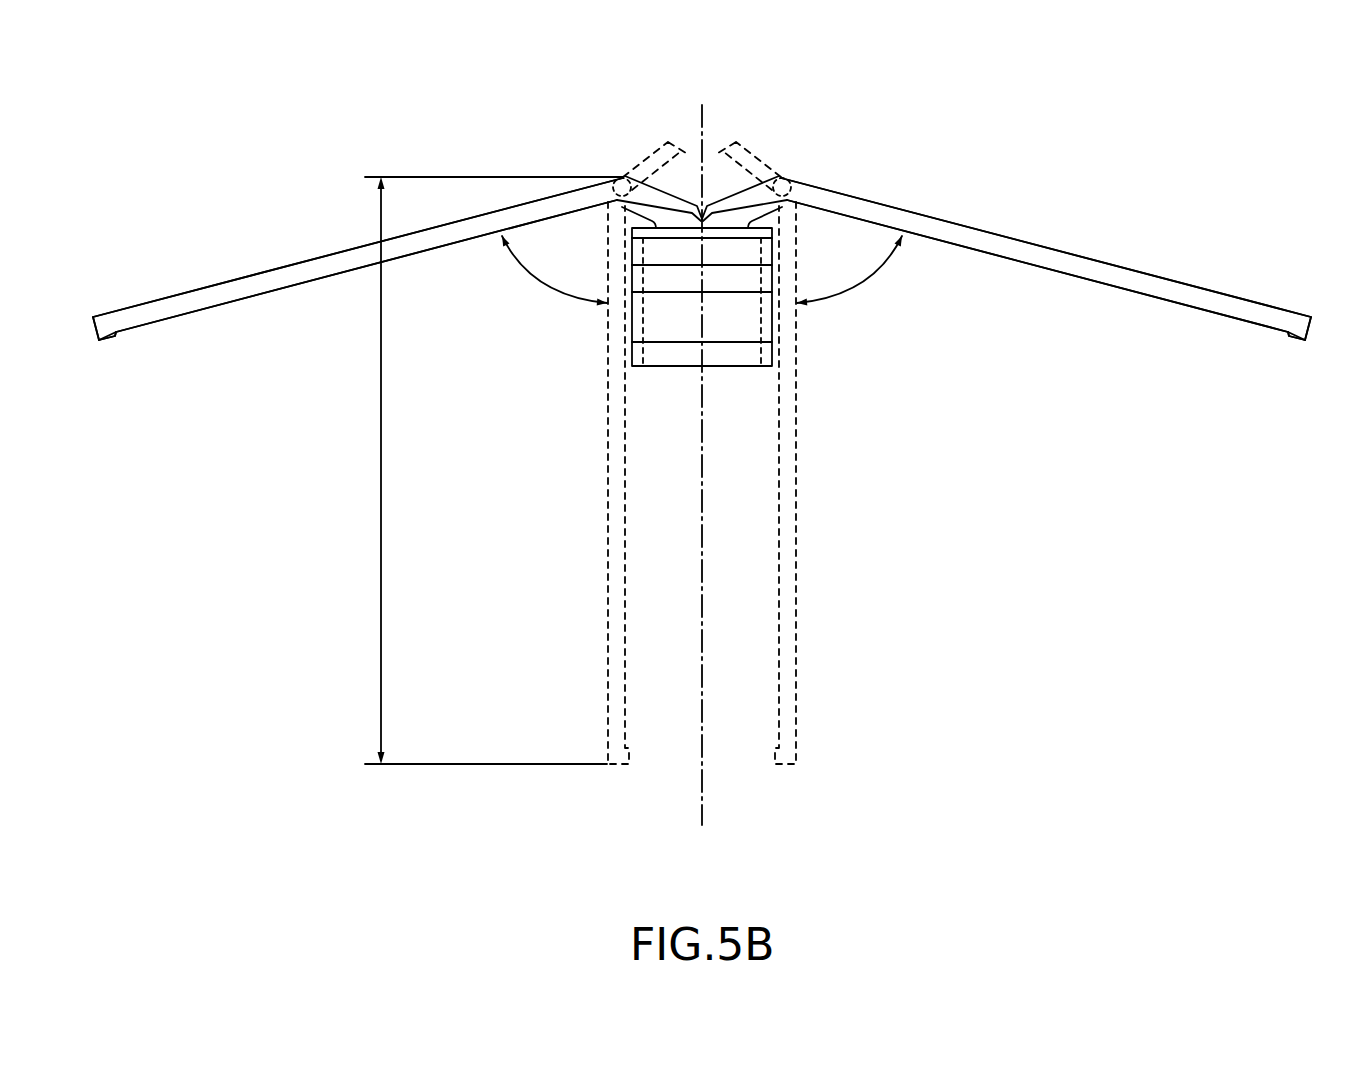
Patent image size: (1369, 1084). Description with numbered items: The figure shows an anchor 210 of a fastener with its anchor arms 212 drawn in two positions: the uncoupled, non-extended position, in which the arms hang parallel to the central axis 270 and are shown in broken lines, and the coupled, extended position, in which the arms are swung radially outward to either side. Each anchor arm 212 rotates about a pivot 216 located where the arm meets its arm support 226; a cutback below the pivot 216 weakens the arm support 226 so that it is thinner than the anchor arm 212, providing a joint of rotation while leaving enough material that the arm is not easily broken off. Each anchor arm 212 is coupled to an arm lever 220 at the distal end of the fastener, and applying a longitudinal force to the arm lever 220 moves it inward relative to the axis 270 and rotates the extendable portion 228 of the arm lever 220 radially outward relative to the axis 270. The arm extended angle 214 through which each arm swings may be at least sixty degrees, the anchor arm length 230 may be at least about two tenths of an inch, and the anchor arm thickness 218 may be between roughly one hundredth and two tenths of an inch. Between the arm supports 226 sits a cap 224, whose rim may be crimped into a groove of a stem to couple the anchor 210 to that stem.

The anchor 210 is at (403, 80).
The anchor arm 212 is at (120, 325).
The arm extended angle 214 is at (543, 286).
The pivot 216 is at (622, 176).
The anchor arm thickness 218 is at (730, 566).
The arm lever 220 is at (668, 140).
The cap 224 is at (725, 330).
The arm support 226 is at (757, 212).
The extendable portion 228 is at (100, 330).
The anchor arm length 230 is at (479, 470).
The axis 270 is at (702, 785).